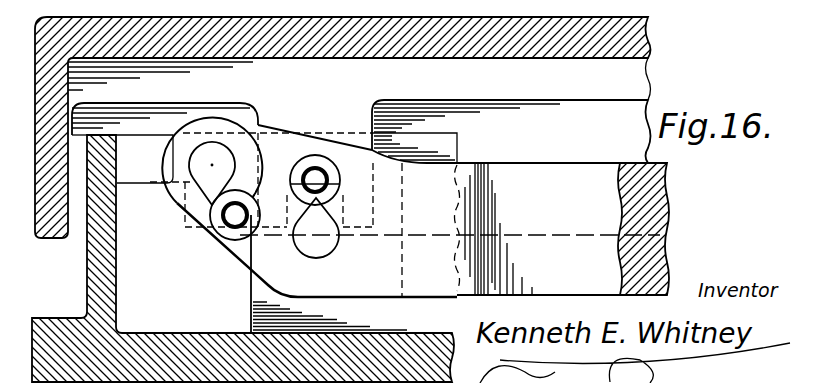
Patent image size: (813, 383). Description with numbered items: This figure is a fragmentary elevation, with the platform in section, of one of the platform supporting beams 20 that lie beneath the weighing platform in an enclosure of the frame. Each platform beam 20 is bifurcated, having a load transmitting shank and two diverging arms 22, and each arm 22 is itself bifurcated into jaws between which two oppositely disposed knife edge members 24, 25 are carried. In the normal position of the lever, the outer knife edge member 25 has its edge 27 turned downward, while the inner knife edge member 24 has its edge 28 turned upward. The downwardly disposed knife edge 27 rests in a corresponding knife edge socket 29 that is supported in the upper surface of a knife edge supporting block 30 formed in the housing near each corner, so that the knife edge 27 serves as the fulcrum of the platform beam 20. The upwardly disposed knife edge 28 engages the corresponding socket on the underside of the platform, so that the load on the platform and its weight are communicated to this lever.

The platform supporting beam 20 is at (580, 172).
The diverging arm 22 is at (562, 229).
The inner knife edge member 24 is at (317, 253).
The outer knife edge member 25 is at (222, 165).
The knife edge 27 is at (206, 214).
The knife edge 28 is at (330, 233).
The knife edge socket 29 is at (183, 200).
The knife edge supporting block 30 is at (252, 289).